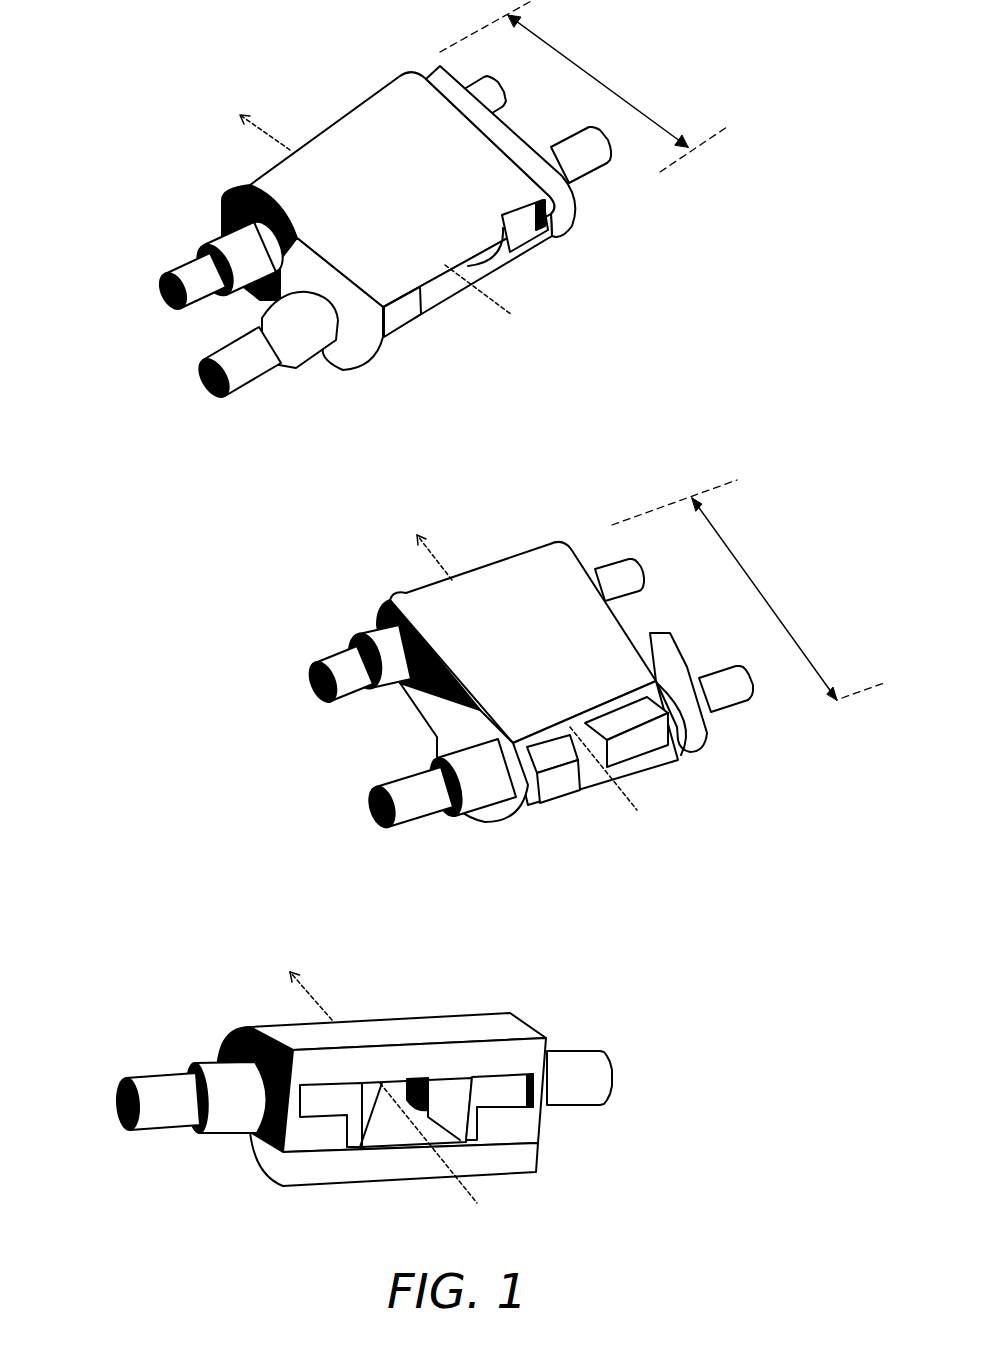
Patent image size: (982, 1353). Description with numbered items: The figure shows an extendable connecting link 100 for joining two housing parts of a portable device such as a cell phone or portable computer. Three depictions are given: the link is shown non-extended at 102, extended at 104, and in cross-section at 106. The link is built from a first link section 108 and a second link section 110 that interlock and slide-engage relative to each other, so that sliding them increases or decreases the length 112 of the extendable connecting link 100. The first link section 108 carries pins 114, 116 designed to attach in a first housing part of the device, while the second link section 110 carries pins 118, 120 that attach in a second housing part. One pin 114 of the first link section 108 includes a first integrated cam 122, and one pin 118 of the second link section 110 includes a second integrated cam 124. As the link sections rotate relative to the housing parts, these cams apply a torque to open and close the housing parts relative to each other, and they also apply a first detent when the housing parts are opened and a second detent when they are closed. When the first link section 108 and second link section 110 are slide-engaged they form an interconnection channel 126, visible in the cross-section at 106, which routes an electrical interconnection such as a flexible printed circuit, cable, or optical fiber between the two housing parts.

The extendable connecting link 100 is at (742, 68).
The non-extended view of the extendable connecting link 102 is at (193, 110).
The extended view of the extendable connecting link 104 is at (625, 462).
The cross-section of the extendable connecting link 106 is at (245, 950).
The first link section 108 is at (345, 110).
The second link section 110 is at (566, 233).
The length 112 is at (639, 60).
The pin 114 is at (178, 262).
The pin 116 is at (447, 95).
The pin 118 is at (246, 396).
The pin 120 is at (583, 178).
The first integrated cam 122 is at (222, 235).
The second integrated cam 124 is at (310, 360).
The interconnection channel 126 is at (445, 288).